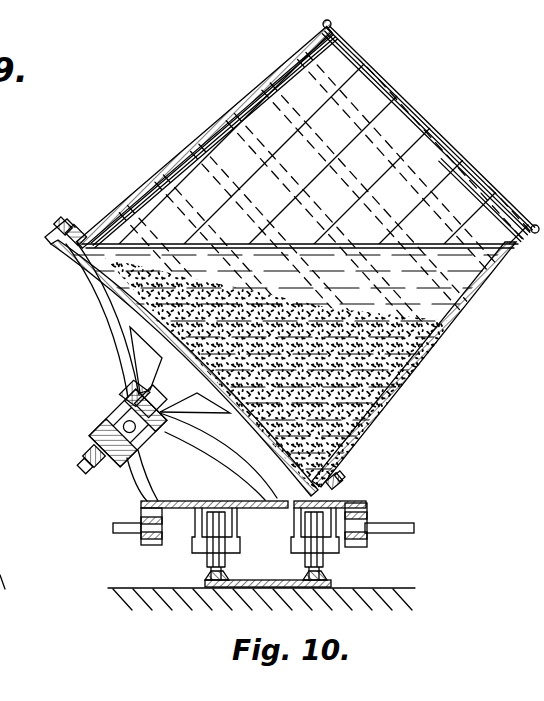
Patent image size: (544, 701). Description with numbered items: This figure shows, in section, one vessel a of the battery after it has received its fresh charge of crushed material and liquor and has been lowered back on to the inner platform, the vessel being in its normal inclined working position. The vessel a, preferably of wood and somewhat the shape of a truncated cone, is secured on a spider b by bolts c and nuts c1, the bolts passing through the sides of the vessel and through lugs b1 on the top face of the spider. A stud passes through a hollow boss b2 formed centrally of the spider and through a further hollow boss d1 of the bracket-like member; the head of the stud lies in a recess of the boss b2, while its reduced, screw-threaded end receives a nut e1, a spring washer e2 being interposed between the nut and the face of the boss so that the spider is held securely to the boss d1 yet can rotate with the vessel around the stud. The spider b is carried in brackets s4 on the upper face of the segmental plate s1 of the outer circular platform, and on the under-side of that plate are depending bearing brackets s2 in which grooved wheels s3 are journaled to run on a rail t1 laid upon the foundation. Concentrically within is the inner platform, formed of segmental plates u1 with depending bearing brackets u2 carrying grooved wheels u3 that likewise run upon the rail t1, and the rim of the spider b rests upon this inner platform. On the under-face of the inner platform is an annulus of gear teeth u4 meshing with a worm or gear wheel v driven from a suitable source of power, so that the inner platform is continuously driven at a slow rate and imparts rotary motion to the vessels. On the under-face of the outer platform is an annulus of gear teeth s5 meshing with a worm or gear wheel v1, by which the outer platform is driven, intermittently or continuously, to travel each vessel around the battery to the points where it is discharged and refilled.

The vessel a is at (190, 144).
The spider b is at (112, 321).
The bolts c is at (55, 221).
The nuts c1 is at (69, 220).
The lugs b1 is at (80, 224).
The hollow boss b2 is at (126, 393).
The hollow boss d1 is at (108, 425).
The spring washer e2 is at (88, 449).
The nut e1 is at (87, 464).
The brackets s4 is at (202, 457).
The annulus of gear teeth s5 is at (143, 512).
The segmental plate s1 is at (226, 503).
The depending bearing brackets s2 is at (199, 525).
The grooved wheels s3 is at (228, 562).
The worm or gear wheel v1 is at (142, 547).
The rail t1 is at (231, 588).
The segmental plates u1 is at (354, 499).
The depending bearing brackets u2 is at (296, 525).
The grooved wheels u3 is at (321, 567).
The annulus of gear teeth u4 is at (366, 511).
The worm or gear wheel v is at (372, 542).